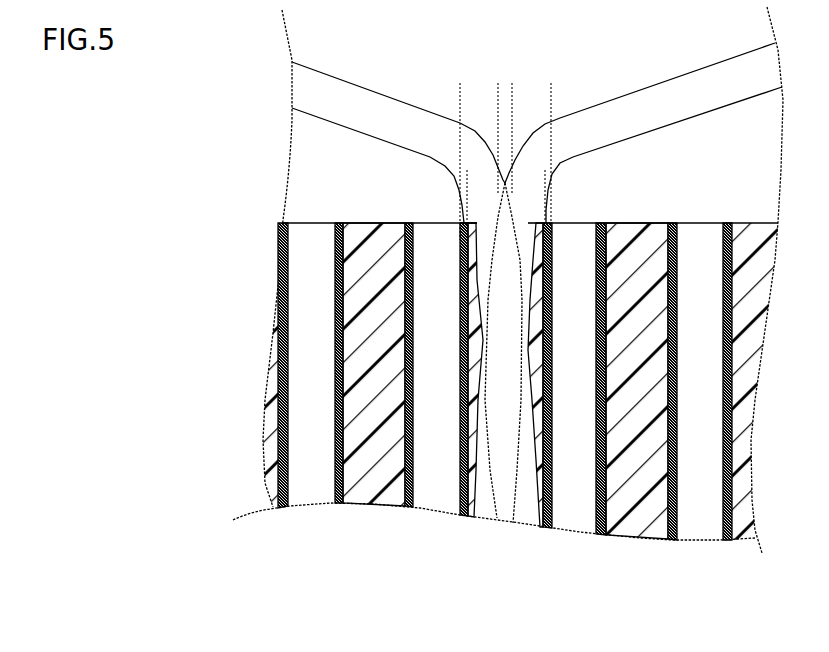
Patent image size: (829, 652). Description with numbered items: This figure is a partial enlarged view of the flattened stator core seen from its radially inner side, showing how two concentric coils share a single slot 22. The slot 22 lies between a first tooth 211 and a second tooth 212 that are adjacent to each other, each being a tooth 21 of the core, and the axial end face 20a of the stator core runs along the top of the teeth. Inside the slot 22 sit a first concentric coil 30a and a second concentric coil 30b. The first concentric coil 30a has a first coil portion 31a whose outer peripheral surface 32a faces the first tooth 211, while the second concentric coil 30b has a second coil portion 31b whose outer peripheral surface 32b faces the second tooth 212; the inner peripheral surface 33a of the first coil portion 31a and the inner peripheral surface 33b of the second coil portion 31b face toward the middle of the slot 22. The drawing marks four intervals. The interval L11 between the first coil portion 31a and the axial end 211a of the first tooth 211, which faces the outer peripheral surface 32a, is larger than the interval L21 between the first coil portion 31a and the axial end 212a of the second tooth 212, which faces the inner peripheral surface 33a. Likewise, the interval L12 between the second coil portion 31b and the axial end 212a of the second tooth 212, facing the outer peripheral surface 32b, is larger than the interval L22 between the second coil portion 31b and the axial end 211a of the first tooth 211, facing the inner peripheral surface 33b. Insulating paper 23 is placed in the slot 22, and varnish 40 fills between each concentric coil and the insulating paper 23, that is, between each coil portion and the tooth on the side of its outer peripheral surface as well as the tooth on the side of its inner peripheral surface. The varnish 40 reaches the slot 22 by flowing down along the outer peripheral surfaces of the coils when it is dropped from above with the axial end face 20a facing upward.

The axial end face 20a is at (701, 222).
The tooth 21 is at (433, 502).
The first tooth 211 is at (372, 305).
The second tooth 212 is at (663, 308).
The axial end of first tooth 211a is at (482, 223).
The axial end of second tooth 212a is at (578, 222).
The slot 22 is at (442, 348).
The insulating paper 23 is at (460, 515).
The varnish 40 is at (567, 355).
The first concentric coil 30a is at (643, 114).
The second concentric coil 30b is at (398, 121).
The first coil portion 31a is at (527, 222).
The second coil portion 31b is at (462, 218).
The outer peripheral surface of first coil portion 32a is at (637, 90).
The outer peripheral surface of second coil portion 32b is at (383, 92).
The inner peripheral surface of first coil portion 33a is at (650, 130).
The inner peripheral surface of second coil portion 33b is at (340, 127).
The interval L11 is at (498, 90).
The interval L12 is at (551, 90).
The interval L21 is at (535, 178).
The interval L22 is at (480, 178).